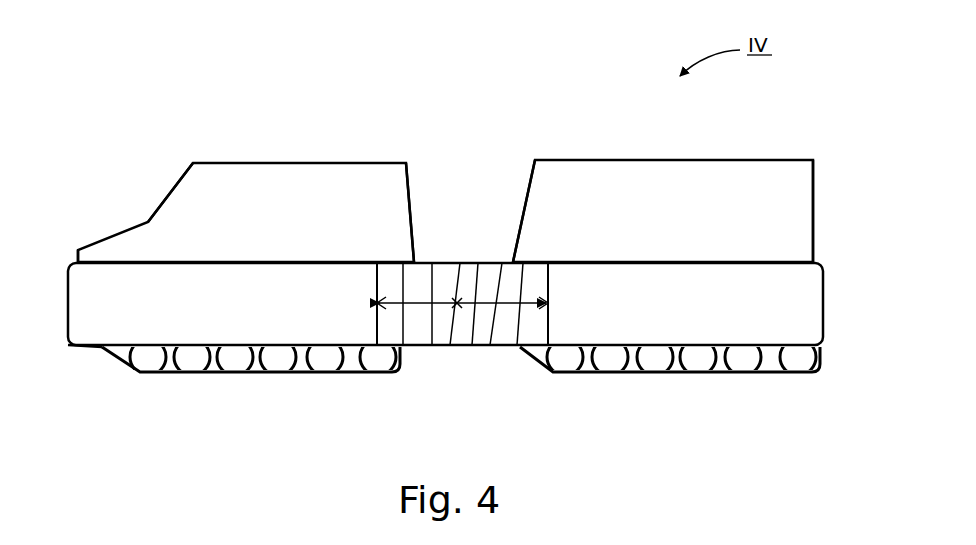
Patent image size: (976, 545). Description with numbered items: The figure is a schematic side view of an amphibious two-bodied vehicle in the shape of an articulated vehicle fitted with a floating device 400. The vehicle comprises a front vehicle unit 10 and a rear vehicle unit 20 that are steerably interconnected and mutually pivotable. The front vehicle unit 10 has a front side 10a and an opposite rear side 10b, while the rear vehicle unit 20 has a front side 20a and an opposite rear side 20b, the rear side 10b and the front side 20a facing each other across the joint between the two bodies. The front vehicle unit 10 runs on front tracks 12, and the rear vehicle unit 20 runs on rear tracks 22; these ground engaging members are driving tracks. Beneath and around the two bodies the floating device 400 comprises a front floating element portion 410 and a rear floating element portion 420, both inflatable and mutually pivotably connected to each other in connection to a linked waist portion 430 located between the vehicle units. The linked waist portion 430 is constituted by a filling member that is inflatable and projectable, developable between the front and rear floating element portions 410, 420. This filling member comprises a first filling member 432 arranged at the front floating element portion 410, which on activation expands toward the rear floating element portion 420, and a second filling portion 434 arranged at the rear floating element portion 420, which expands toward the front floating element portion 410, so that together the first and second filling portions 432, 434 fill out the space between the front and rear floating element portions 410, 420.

The front vehicle unit 10 is at (275, 178).
The front side 10a is at (163, 200).
The rear side 10b is at (411, 198).
The front tracks 12 is at (256, 375).
The rear vehicle unit 20 is at (685, 173).
The front side 20a is at (531, 181).
The rear side 20b is at (813, 208).
The rear tracks 22 is at (706, 377).
The floating device 400 is at (477, 331).
The front floating element portion 410 is at (98, 350).
The rear floating element portion 420 is at (829, 305).
The linked waist portion 430 is at (477, 352).
The first filling member 432 is at (413, 303).
The second filling portion 434 is at (517, 303).